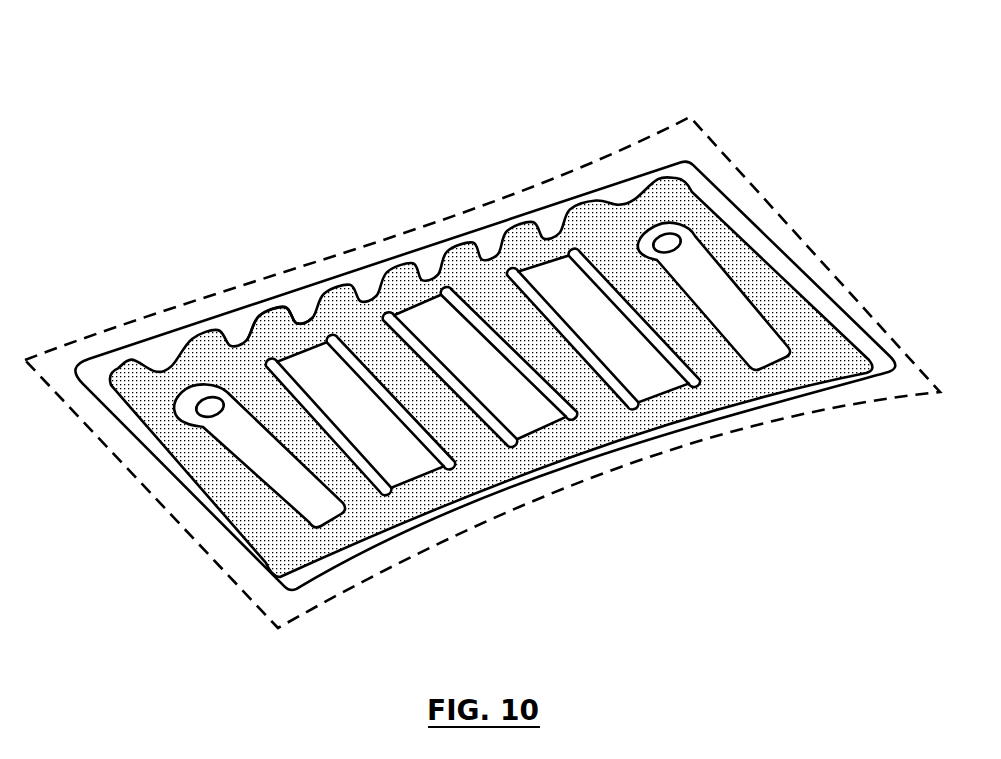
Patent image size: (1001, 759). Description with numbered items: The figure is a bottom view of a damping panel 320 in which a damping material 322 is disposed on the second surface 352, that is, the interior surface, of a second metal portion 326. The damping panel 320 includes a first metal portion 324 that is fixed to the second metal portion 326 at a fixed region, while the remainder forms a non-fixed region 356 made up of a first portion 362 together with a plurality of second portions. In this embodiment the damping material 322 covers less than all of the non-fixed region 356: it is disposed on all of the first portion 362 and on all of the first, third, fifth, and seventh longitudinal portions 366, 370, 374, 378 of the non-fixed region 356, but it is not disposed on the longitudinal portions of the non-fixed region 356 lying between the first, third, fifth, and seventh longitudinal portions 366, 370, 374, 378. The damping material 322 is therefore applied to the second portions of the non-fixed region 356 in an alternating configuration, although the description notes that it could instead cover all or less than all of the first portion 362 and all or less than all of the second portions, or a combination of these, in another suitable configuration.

The damping panel 320 is at (482, 328).
The damping material 322 is at (675, 186).
The first metal portion 324 is at (485, 206).
The second metal portion 326 is at (180, 495).
The second surface 352 is at (363, 288).
The non-fixed region 356 is at (783, 307).
The first portion 362 is at (147, 391).
The first longitudinal portion 366 is at (337, 462).
The third longitudinal portion 370 is at (438, 393).
The fifth longitudinal portion 374 is at (557, 357).
The seventh longitudinal portion 378 is at (707, 342).